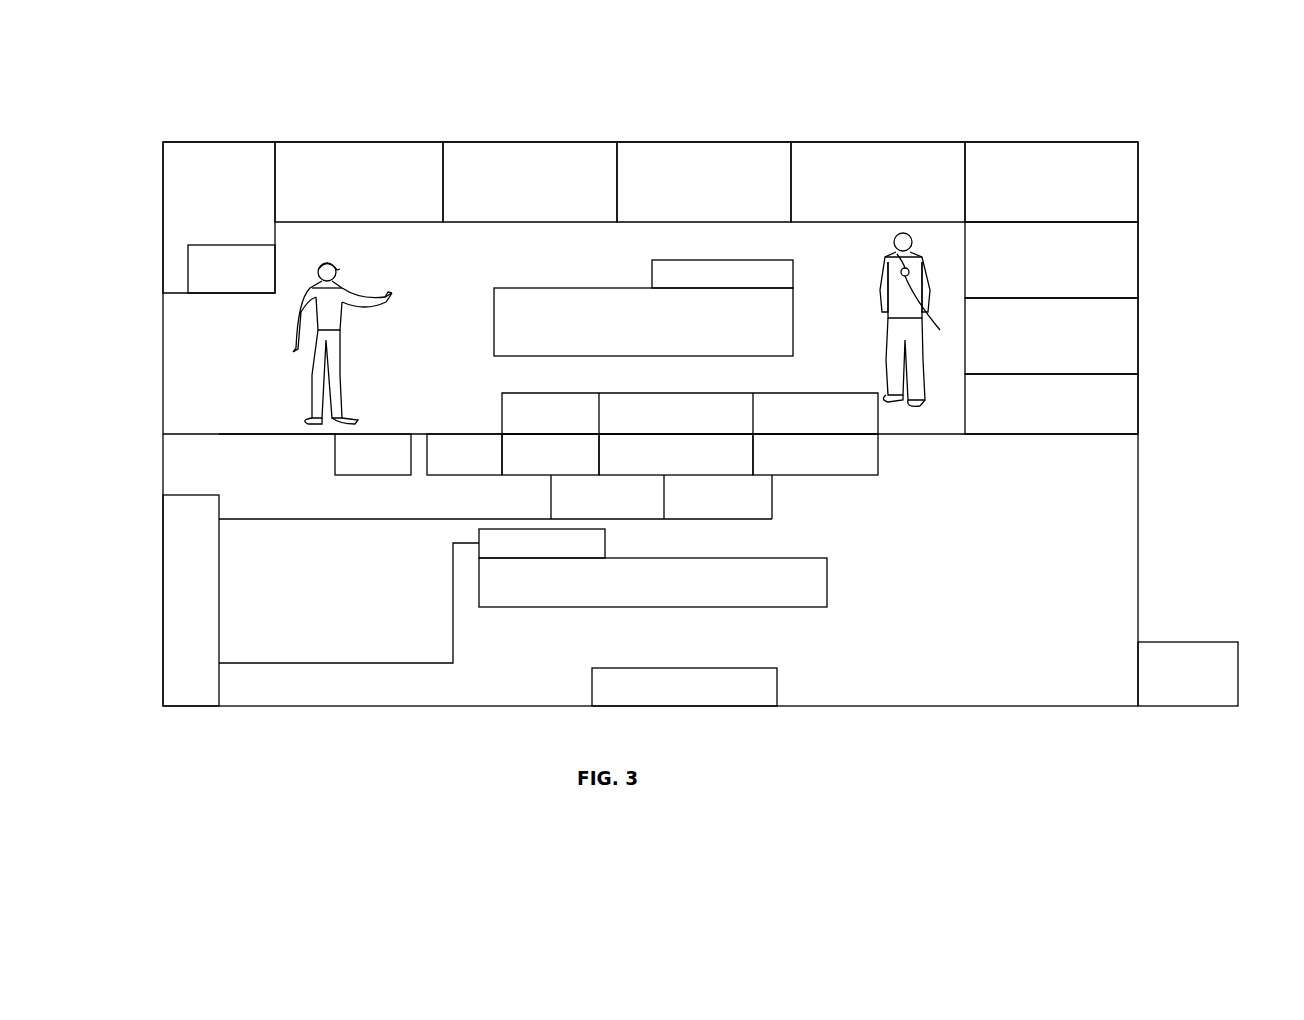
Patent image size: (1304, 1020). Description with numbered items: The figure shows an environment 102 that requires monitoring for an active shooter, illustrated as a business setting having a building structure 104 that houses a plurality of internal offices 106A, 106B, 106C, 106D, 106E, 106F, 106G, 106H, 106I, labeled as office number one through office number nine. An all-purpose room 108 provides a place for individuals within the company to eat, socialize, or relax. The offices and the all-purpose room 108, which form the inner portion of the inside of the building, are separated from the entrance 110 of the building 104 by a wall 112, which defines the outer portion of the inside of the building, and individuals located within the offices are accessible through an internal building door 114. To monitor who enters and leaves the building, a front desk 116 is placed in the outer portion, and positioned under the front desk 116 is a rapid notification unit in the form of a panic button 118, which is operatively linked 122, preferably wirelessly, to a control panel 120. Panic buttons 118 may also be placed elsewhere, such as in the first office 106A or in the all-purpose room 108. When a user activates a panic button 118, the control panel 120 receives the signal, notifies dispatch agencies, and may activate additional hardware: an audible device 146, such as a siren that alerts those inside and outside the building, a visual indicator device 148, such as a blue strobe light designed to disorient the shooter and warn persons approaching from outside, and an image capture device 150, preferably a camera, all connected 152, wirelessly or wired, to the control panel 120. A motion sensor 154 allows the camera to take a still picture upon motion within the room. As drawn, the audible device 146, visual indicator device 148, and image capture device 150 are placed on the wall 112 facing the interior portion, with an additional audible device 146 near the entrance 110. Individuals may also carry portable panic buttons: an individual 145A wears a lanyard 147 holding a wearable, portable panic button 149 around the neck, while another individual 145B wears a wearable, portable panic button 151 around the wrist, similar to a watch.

The environment 102 is at (108, 146).
The building structure 104 is at (162, 432).
The office 106A is at (223, 147).
The office 106B is at (381, 147).
The office 106C is at (539, 147).
The office 106D is at (677, 147).
The office 106E is at (863, 147).
The office 106F is at (1033, 147).
The office 106G is at (1134, 262).
The office 106H is at (1134, 335).
The office 106I is at (1134, 396).
The all-purpose room 108 is at (494, 315).
The entrance 110 is at (747, 707).
The wall 112 is at (240, 436).
The internal building door 114 is at (344, 476).
The front desk 116 is at (828, 578).
The panic button 118 is at (276, 268).
The control panel 120 is at (166, 688).
The operative link 122 is at (336, 665).
The individual 145A is at (884, 316).
The individual 145B is at (315, 378).
The audible device 146 is at (832, 476).
The lanyard 147 is at (908, 253).
The visual indicator device 148 is at (698, 476).
The wearable, portable panic button 149 is at (932, 319).
The image capture device 150 is at (514, 476).
The wearable, portable panic button 151 is at (386, 296).
The connection 152 is at (330, 520).
The motion sensor 154 is at (457, 433).